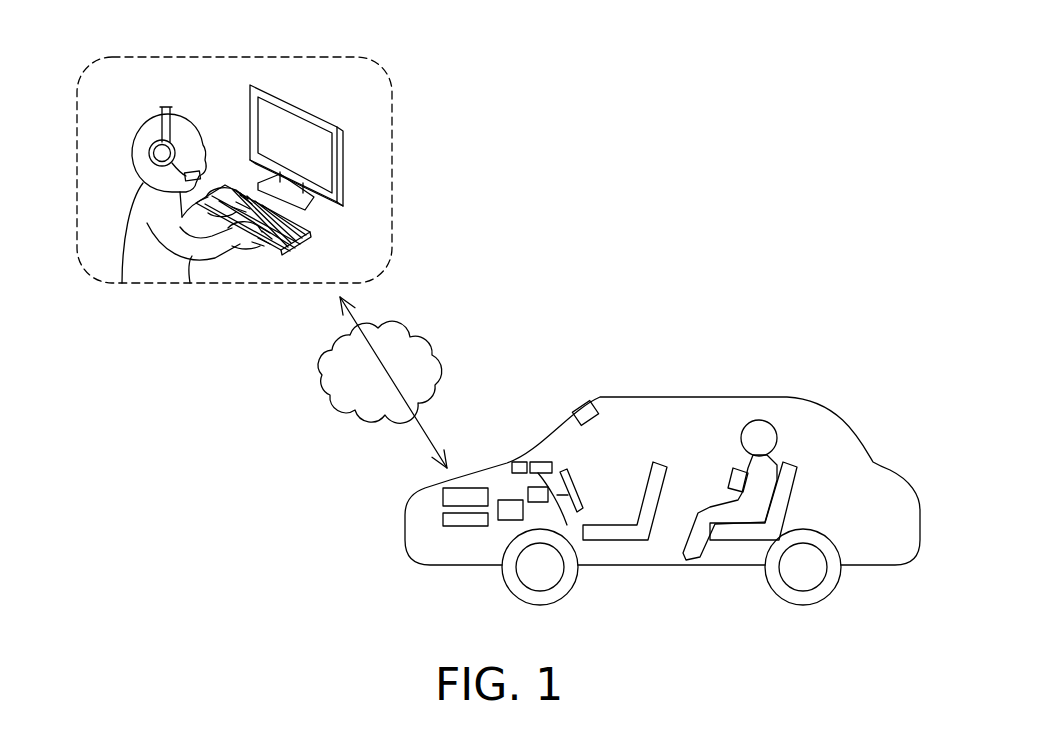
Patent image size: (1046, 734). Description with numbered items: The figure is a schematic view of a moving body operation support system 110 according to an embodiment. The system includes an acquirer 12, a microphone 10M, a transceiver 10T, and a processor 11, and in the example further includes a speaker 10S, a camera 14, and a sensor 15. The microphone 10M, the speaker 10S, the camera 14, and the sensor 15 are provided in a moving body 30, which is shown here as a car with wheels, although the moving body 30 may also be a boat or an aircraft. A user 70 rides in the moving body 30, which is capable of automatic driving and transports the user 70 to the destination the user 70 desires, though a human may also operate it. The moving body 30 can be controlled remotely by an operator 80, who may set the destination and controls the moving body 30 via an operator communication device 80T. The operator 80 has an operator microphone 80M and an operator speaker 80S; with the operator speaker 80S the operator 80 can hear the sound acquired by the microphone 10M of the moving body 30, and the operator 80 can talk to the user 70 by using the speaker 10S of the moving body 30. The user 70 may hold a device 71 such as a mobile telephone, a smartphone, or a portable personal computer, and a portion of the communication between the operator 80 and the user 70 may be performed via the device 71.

The operator 80 is at (148, 113).
The operator speaker 80S is at (180, 127).
The operator microphone 80M is at (207, 168).
The operator communication device 80T is at (310, 231).
The moving body operation support system 110 is at (850, 320).
The moving body 30 is at (882, 466).
The transceiver 10T is at (455, 495).
The processor 11 is at (455, 519).
The acquirer 12 is at (508, 502).
The speaker 10S is at (537, 500).
The sensor 15 is at (519, 462).
The microphone 10M is at (540, 462).
The camera 14 is at (590, 407).
The user 70 is at (766, 434).
The device 71 is at (733, 478).